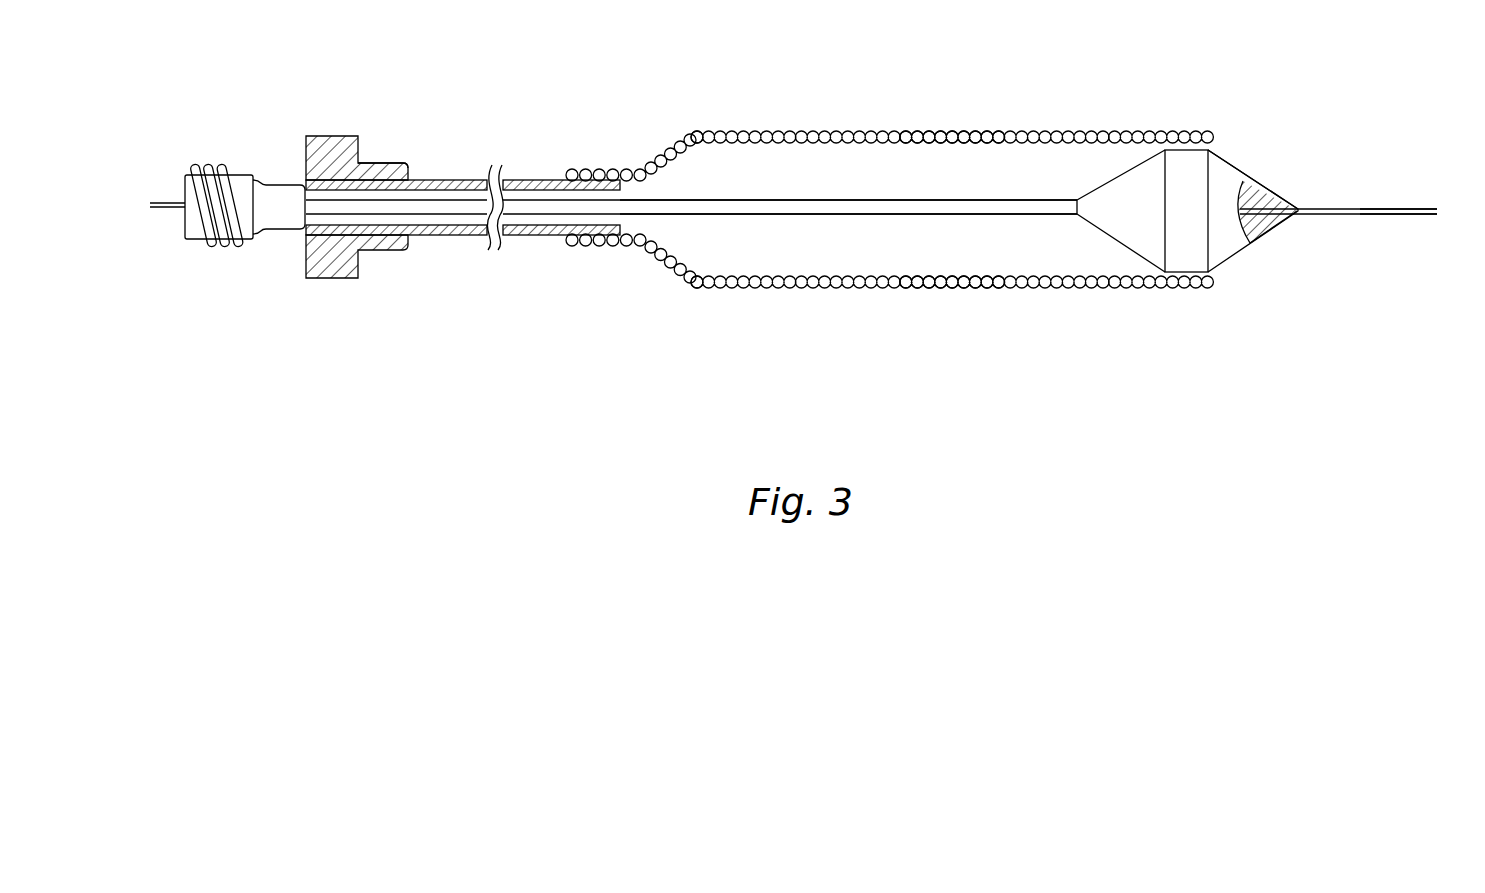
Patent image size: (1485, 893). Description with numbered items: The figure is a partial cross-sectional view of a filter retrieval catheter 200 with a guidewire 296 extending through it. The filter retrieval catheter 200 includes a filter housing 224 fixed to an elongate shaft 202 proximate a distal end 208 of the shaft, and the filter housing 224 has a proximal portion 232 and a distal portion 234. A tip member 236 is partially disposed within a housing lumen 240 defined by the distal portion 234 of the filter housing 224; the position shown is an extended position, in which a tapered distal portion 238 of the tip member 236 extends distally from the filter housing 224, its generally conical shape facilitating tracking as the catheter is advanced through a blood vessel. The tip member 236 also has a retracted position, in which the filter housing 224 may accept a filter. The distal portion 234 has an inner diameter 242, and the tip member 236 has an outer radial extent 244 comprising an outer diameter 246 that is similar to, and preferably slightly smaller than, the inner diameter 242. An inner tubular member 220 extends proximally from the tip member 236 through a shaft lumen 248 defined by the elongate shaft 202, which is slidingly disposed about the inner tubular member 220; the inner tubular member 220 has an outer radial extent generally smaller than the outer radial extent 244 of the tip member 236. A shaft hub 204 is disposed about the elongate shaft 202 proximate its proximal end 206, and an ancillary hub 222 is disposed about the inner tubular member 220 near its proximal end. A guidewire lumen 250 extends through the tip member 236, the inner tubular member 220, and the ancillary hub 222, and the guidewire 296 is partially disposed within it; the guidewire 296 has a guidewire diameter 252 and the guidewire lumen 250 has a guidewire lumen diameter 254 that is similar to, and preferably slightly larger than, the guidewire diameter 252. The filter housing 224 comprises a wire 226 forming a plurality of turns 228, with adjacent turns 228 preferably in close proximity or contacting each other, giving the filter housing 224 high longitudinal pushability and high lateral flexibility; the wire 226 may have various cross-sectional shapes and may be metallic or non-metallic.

The filter retrieval catheter 200 is at (585, 422).
The elongate shaft 202 is at (523, 180).
The shaft hub 204 is at (332, 136).
The proximal end 206 is at (405, 145).
The distal end 208 is at (586, 266).
The inner tubular member 220 is at (975, 200).
The ancillary hub 222 is at (240, 175).
The filter housing 224 is at (767, 294).
The wire 226 is at (815, 290).
The turns 228 is at (890, 290).
The proximal portion 232 is at (668, 122).
The distal portion 234 is at (906, 92).
The tip member 236 is at (1116, 252).
The tapered distal portion 238 is at (1225, 165).
The housing lumen 240 is at (968, 250).
The inner diameter 242 is at (783, 140).
The outer radial extent 244 is at (1183, 150).
The outer diameter 246 is at (1205, 150).
The shaft lumen 248 is at (443, 218).
The guidewire lumen 250 is at (1243, 195).
The guidewire diameter 252 is at (1378, 208).
The guidewire lumen diameter 254 is at (1266, 232).
The guidewire 296 is at (1366, 215).